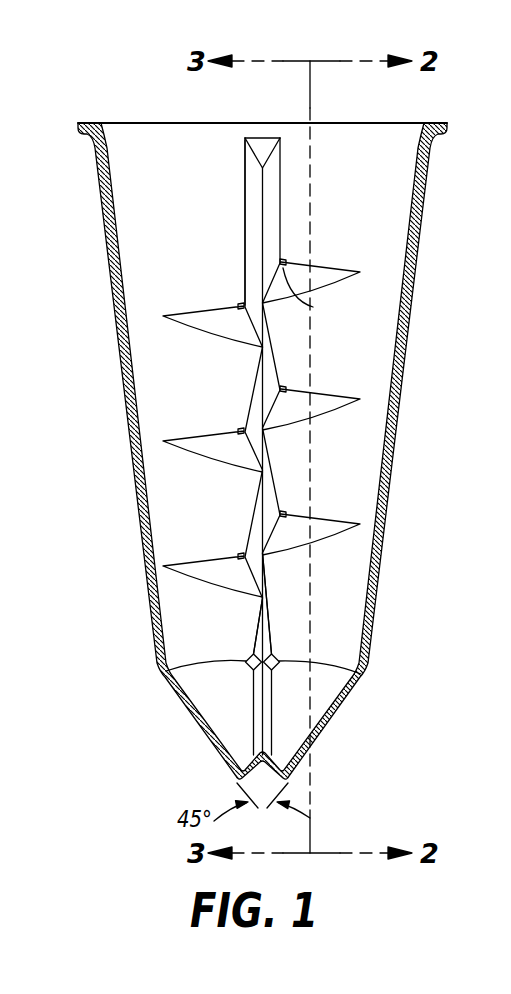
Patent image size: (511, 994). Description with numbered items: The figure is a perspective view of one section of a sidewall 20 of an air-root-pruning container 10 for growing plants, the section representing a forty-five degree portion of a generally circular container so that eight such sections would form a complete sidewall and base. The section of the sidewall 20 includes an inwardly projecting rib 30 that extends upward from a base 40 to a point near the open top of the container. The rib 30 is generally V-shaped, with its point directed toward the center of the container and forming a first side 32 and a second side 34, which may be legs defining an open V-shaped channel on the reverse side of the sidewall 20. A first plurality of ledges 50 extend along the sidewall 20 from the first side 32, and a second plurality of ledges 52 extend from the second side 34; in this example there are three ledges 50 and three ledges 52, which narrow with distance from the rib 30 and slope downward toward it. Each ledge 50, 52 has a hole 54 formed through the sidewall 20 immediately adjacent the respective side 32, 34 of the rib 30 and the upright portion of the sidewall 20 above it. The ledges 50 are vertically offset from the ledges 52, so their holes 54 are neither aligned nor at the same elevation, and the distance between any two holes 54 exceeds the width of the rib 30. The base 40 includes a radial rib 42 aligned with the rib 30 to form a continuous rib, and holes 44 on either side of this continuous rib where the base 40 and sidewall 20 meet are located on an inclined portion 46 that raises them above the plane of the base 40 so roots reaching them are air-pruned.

The air-root-pruning container 10 is at (138, 107).
The sidewall 20 is at (420, 236).
The inwardly projecting rib 30 is at (297, 206).
The first side 32 is at (245, 203).
The second side 34 is at (270, 178).
The base 40 is at (340, 678).
The radial rib 42 is at (253, 727).
The holes 44 is at (252, 655).
The inclined portion 46 is at (248, 666).
The first plurality of ledges 50 is at (200, 322).
The second plurality of ledges 52 is at (318, 272).
The hole 54 is at (313, 307).